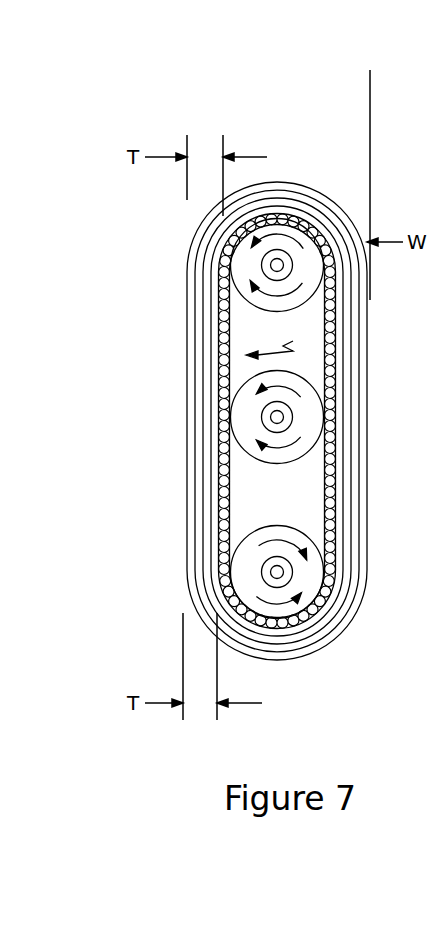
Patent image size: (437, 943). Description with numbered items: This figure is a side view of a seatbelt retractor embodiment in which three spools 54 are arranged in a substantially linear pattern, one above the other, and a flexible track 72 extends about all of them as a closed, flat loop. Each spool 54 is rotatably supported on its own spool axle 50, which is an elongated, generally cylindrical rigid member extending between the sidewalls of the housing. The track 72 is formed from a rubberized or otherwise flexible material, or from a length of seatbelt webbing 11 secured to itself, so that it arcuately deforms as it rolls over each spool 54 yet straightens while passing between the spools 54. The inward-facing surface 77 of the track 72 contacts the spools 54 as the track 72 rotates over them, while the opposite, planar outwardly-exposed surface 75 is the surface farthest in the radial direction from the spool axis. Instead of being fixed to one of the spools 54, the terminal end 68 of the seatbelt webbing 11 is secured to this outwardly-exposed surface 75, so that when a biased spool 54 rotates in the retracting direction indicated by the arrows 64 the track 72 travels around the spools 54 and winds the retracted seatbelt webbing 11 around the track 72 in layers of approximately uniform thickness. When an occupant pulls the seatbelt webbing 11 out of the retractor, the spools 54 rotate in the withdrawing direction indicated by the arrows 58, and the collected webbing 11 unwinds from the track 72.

The seatbelt webbing 11 is at (370, 127).
The spool axle 50 is at (286, 268).
The spool 54 is at (300, 261).
The arrows indicating withdrawing direction 58 is at (282, 234).
The arrows indicating retracting direction 64 is at (270, 308).
The terminal end of the seatbelt webbing 68 is at (338, 492).
The flexible track 72 is at (271, 340).
The outwardly-exposed surface 75 is at (338, 554).
The inward-facing surface 77 is at (326, 457).